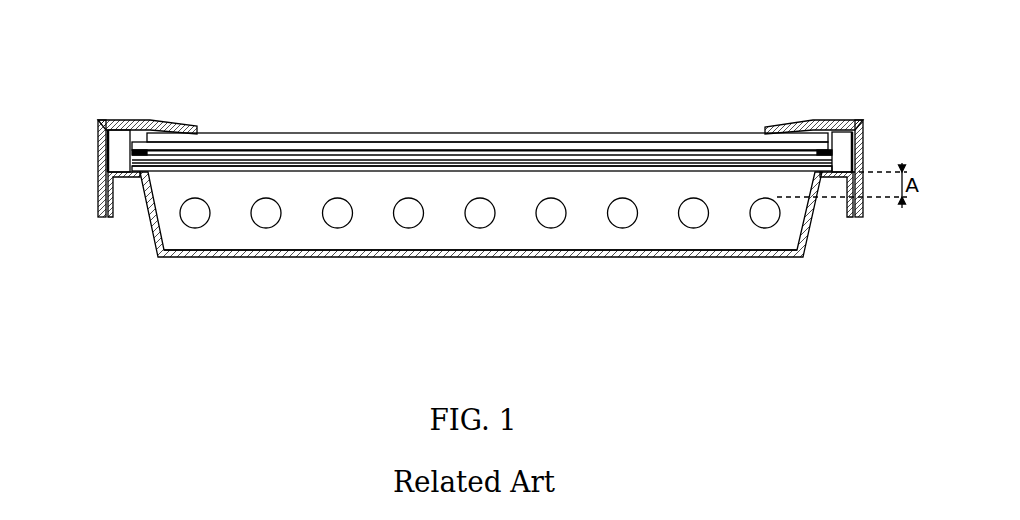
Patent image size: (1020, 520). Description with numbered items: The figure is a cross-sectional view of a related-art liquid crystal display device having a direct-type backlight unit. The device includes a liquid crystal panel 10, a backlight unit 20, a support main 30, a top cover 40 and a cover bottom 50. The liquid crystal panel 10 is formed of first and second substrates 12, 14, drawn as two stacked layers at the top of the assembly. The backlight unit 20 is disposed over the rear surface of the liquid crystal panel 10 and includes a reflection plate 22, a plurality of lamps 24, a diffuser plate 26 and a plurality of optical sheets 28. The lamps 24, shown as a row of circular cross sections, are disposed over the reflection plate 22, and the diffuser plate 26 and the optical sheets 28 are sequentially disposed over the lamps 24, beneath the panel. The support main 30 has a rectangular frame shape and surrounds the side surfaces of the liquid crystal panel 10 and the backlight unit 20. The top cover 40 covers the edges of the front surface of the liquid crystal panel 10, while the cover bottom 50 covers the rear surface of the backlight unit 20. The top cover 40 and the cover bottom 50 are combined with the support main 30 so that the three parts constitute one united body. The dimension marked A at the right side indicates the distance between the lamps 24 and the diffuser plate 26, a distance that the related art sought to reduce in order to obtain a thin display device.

The liquid crystal panel 10 is at (480, 86).
The first substrate 12 is at (425, 148).
The second substrate 14 is at (355, 138).
The backlight unit 20 is at (482, 265).
The reflection plate 22 is at (727, 318).
The lamps 24 is at (483, 215).
The diffuser plate 26 is at (643, 167).
The optical sheets 28 is at (717, 158).
The support main 30 is at (112, 152).
The top cover 40 is at (167, 127).
The cover bottom 50 is at (218, 260).